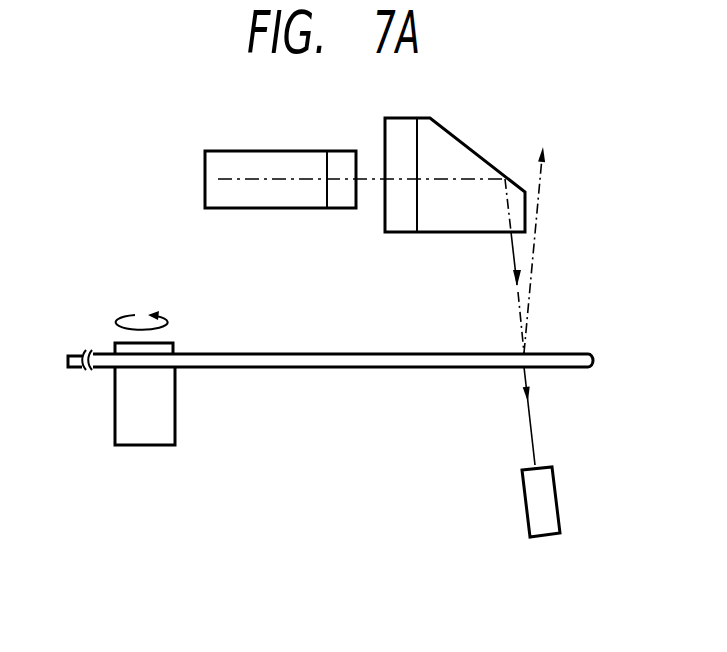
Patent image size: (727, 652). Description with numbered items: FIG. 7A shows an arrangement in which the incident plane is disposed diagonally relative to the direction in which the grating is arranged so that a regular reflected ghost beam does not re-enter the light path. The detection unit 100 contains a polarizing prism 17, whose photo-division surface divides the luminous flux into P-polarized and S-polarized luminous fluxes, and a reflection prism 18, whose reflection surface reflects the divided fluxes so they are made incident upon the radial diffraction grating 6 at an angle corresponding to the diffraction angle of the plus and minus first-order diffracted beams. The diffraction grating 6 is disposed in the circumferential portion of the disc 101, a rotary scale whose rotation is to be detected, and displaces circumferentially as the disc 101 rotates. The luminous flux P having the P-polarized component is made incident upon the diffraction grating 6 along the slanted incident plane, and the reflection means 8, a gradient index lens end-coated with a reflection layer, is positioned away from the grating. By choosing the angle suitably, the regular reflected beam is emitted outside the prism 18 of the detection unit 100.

The detection unit 100 is at (301, 164).
The polarizing prism 17 is at (280, 154).
The reflection prism 18 is at (455, 164).
The luminous flux having P-polarized component P is at (503, 306).
The radial diffraction grating 6 is at (330, 332).
The disc 101 is at (330, 379).
The reflection means 8 is at (561, 501).